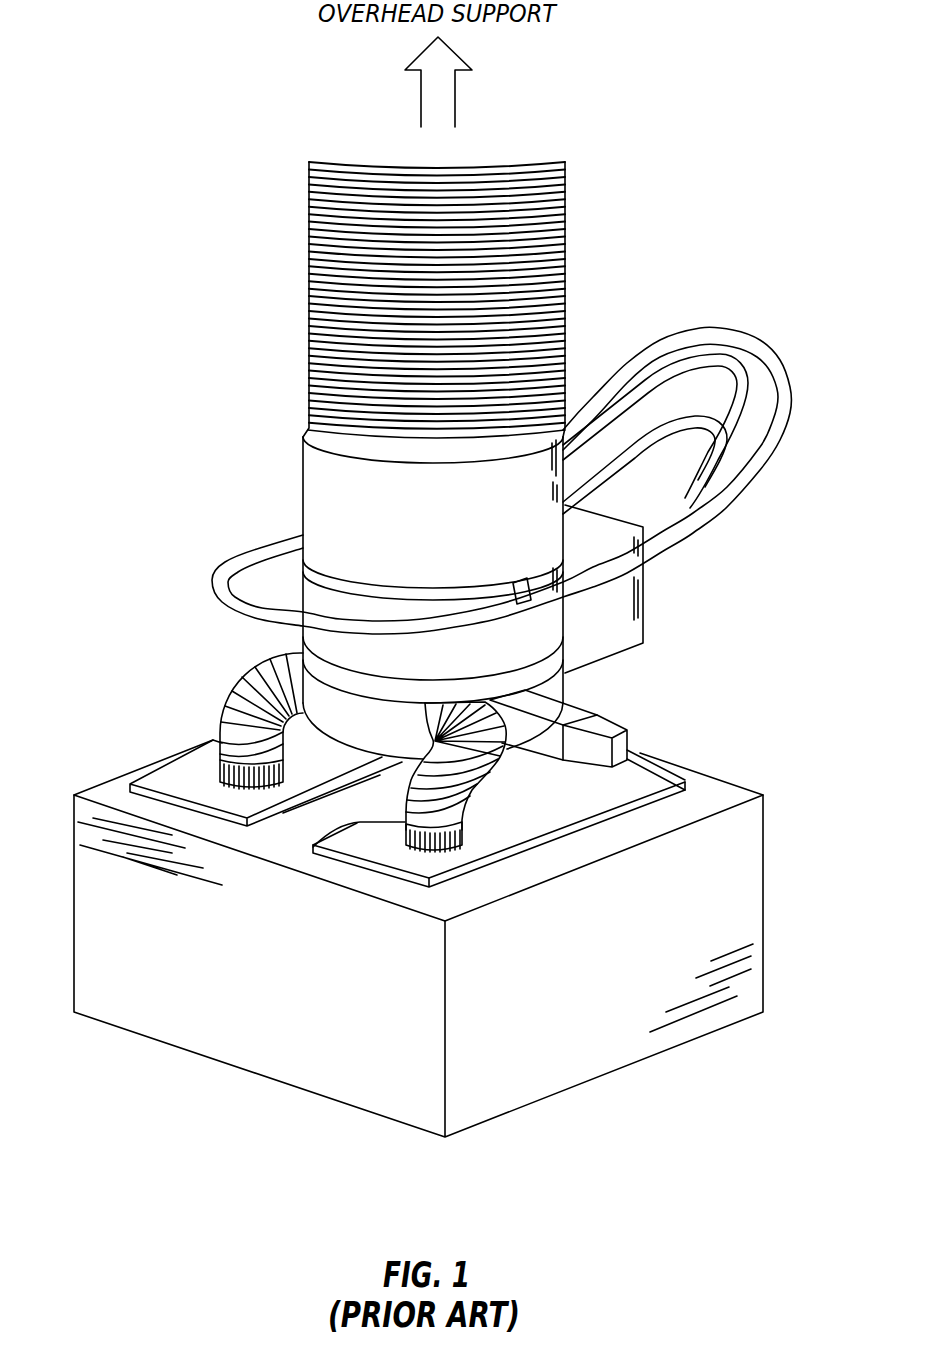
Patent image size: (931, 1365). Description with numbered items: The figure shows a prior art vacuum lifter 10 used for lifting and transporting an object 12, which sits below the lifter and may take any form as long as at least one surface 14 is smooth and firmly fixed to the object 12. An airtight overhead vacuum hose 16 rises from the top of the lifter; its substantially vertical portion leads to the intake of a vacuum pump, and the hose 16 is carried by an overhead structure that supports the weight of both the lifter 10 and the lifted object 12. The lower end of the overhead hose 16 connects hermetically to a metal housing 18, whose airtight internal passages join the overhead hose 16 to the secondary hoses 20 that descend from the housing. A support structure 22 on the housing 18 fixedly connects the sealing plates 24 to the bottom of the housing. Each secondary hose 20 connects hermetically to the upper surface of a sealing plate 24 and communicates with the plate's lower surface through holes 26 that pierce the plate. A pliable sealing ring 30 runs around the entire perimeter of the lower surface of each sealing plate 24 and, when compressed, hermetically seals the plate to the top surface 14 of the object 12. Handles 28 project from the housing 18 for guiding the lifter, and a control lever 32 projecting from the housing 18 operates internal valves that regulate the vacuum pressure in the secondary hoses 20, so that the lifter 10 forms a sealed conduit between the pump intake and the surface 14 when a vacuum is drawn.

The vacuum lifter 10 is at (240, 450).
The object 12 is at (509, 1098).
The surface 14 is at (108, 797).
The overhead vacuum hose 16 is at (565, 270).
The metal housing 18 is at (233, 627).
The secondary hoses 20 is at (229, 700).
The support structure 22 is at (623, 740).
The sealing plates 24 is at (286, 784).
The holes 26 is at (215, 747).
The handles 28 is at (258, 552).
The pliable sealing ring 30 is at (452, 875).
The control lever 32 is at (730, 363).